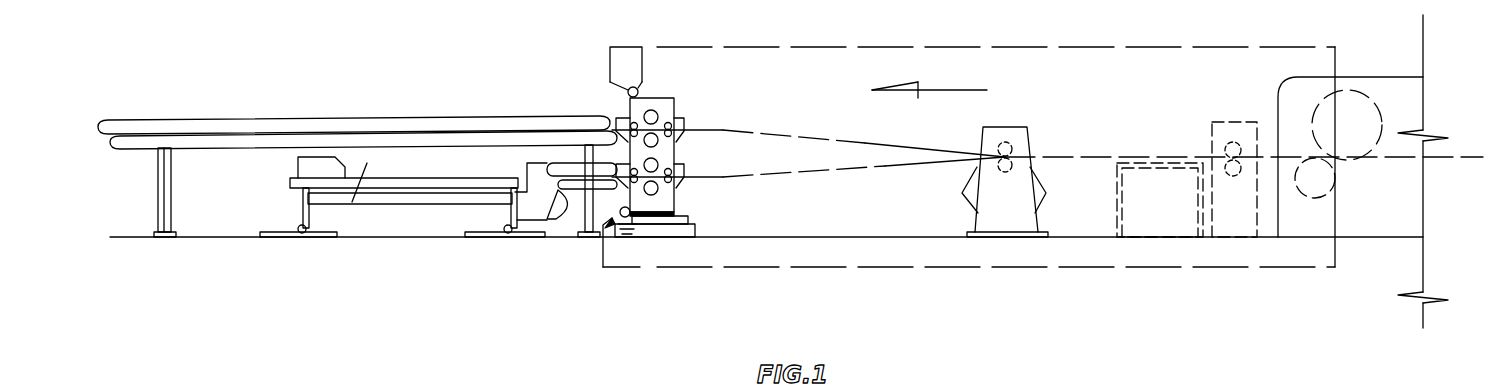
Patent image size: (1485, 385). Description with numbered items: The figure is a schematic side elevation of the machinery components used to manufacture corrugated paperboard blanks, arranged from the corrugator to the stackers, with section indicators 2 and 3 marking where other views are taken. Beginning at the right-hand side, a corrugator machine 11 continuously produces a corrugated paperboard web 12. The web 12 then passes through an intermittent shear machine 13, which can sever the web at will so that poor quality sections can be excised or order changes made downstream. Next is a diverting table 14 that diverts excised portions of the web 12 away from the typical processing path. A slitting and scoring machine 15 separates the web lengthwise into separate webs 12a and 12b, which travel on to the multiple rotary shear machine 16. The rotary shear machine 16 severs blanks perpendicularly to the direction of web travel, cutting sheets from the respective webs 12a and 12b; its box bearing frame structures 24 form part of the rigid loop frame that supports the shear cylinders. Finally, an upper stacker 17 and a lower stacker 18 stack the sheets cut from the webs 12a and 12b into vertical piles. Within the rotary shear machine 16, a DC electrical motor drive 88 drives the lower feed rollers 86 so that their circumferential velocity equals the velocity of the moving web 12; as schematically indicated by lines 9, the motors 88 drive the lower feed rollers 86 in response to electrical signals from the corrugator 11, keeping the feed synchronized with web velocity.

The section line 2- 2 is at (215, 33).
The section line 3- 3 is at (652, 73).
The lines 9 is at (1030, 25).
The corrugator machine 11 is at (1362, 73).
The corrugated paperboard web 12 is at (1110, 160).
The separate web 12a is at (908, 148).
The separate web 12b is at (908, 168).
The intermittent shear machine 13 is at (1222, 119).
The diverting table 14 is at (1152, 160).
The slitting and scoring machine 15 is at (1030, 145).
The multiple rotary shear machine 16 is at (660, 157).
The upper stacker 17 is at (462, 96).
The lower stacker 18 is at (438, 205).
The box bearing frame structures 24 is at (672, 110).
The lower feed rollers 86 is at (672, 138).
The DC electrical motor drive 88 is at (640, 88).